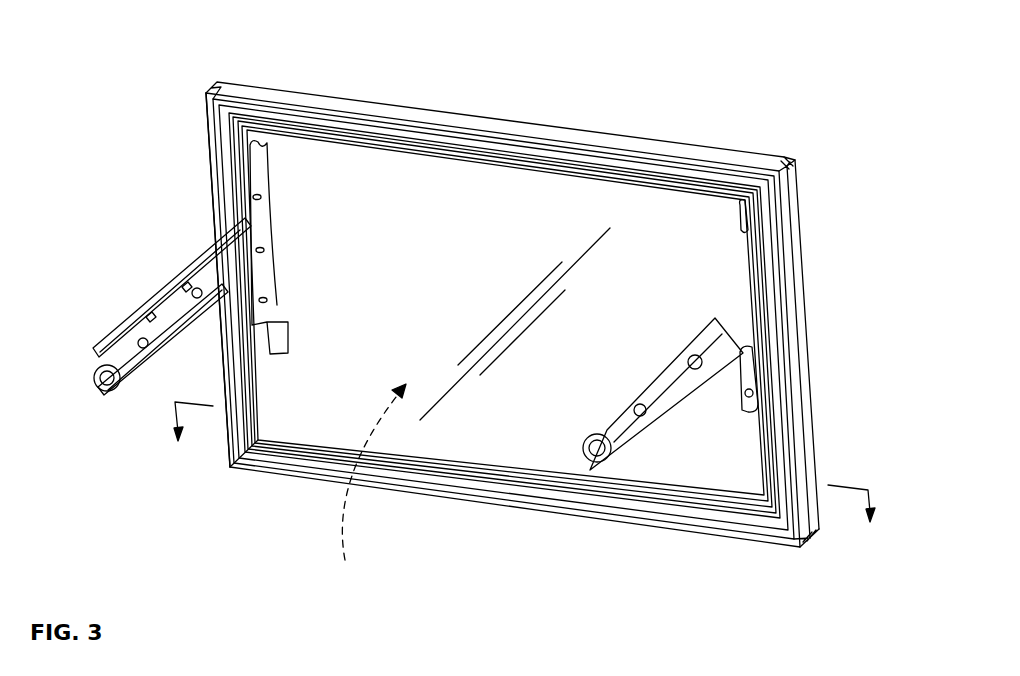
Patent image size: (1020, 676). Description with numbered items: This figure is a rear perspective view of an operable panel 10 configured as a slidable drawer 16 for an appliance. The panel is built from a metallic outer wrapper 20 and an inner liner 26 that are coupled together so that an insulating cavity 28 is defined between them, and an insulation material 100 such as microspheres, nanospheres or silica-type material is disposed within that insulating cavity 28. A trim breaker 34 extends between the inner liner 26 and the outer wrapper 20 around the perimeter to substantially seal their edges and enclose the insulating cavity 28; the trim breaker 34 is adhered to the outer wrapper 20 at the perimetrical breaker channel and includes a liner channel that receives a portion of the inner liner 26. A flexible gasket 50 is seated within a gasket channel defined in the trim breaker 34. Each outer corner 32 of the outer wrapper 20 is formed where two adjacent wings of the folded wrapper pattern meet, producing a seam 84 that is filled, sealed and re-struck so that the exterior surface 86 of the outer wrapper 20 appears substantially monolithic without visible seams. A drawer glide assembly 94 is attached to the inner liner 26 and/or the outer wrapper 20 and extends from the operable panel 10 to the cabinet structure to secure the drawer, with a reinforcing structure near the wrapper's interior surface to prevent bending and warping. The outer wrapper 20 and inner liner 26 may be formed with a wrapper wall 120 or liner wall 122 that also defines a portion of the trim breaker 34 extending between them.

The operable panel 10 is at (398, 80).
The slidable drawer 16 is at (796, 328).
The metallic outer wrapper 20 is at (648, 138).
The inner liner 26 is at (450, 412).
The insulating cavity 28 is at (368, 487).
The outer corner 32 is at (812, 540).
The trim breaker 34 is at (262, 447).
The flexible gasket 50 is at (214, 134).
The seam 84 is at (790, 166).
The exterior surface 86 is at (495, 108).
The drawer glide assembly 94 is at (170, 300).
The insulation material 100 is at (690, 272).
The wrapper wall 120 is at (268, 98).
The liner wall 122 is at (705, 468).